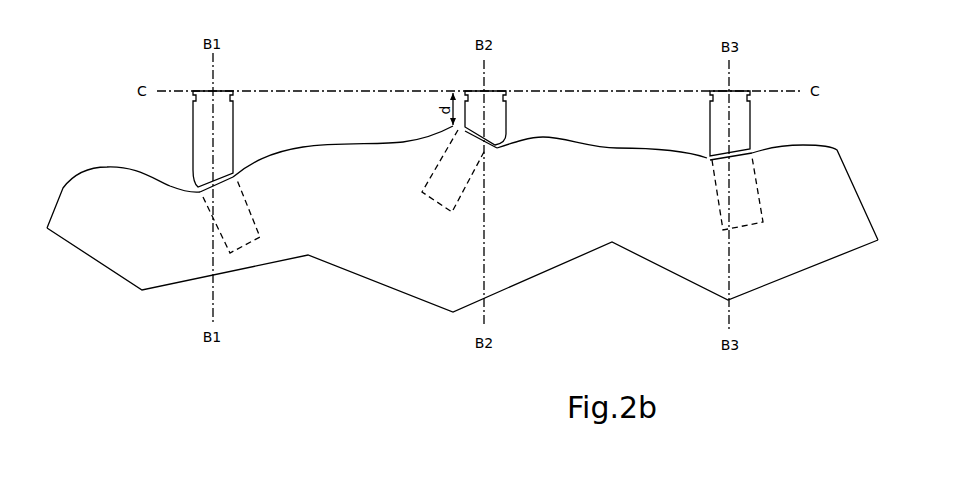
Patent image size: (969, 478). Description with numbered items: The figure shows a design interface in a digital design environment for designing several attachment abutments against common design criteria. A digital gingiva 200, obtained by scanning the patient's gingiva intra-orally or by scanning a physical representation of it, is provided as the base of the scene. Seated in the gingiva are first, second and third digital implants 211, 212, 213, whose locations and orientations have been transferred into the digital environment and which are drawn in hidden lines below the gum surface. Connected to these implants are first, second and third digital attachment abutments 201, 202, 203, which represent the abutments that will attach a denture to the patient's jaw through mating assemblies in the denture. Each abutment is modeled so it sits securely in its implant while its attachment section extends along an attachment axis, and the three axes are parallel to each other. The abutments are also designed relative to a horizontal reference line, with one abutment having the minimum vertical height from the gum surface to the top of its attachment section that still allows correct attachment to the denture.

The digital gingiva 200 is at (137, 263).
The first digital attachment abutment 201 is at (193, 127).
The second digital attachment abutment 202 is at (507, 118).
The third digital attachment abutment 203 is at (720, 128).
The first digital implant 211 is at (200, 192).
The second digital implant 212 is at (453, 172).
The third digital implant 213 is at (720, 173).